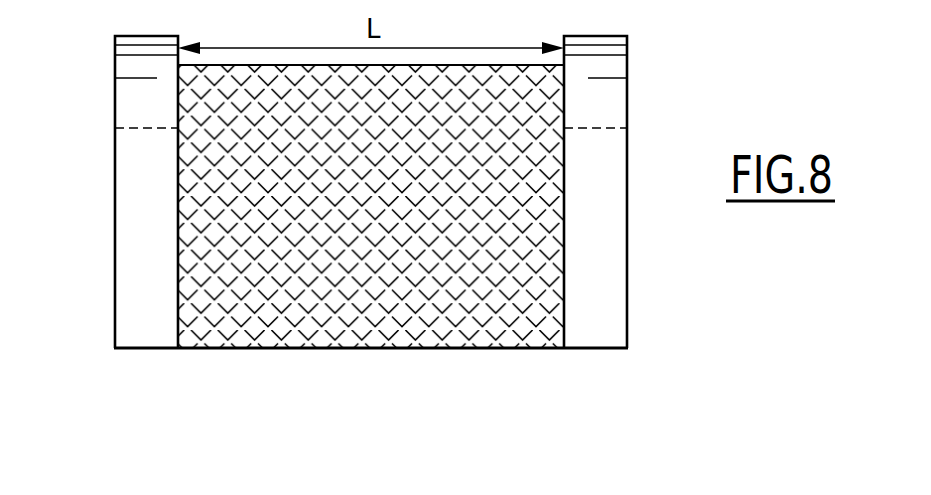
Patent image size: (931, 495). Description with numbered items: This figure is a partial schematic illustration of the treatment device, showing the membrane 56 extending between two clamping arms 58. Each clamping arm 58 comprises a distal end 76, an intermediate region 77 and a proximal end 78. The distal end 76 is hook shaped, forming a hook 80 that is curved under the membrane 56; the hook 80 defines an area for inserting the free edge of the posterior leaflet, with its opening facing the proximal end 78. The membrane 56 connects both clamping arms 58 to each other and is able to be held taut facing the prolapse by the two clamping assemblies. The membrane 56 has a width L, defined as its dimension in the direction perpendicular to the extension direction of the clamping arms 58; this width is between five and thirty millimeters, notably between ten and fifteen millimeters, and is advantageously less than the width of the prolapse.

The membrane 56 is at (421, 304).
The clamping arm 58 is at (137, 195).
The distal end 76 is at (137, 66).
The intermediate region 77 is at (136, 237).
The proximal end 78 is at (127, 328).
The hook 80 is at (140, 113).